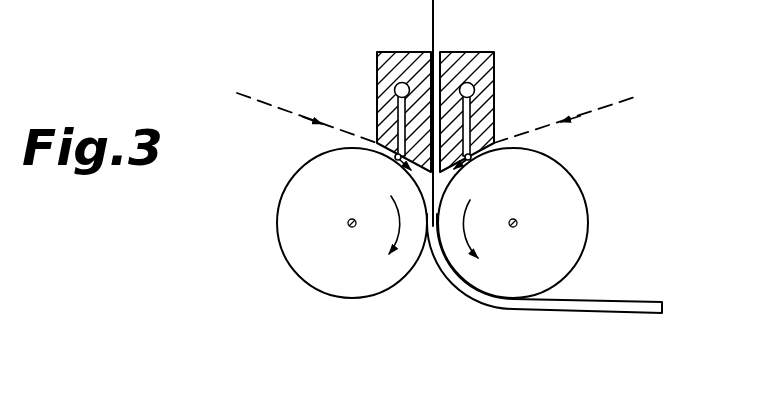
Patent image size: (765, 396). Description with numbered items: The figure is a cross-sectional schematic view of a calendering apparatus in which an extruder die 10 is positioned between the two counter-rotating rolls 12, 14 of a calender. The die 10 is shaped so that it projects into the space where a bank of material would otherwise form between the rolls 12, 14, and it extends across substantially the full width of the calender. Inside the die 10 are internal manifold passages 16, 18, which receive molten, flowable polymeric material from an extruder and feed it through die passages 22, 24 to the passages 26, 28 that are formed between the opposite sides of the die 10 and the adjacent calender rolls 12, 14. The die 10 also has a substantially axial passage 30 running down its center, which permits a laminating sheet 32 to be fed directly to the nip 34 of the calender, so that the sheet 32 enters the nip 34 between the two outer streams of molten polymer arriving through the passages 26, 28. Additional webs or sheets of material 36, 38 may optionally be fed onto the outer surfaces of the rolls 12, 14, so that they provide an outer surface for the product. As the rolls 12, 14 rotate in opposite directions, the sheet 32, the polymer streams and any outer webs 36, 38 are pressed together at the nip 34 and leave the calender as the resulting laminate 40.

The extruder die 10 is at (498, 97).
The calender roll 12 is at (302, 233).
The calender roll 14 is at (572, 240).
The internal manifold passage 16 is at (397, 87).
The internal manifold passage 18 is at (471, 88).
The die passage 22 is at (399, 105).
The die passage 24 is at (468, 122).
The passage 26 is at (396, 161).
The passage 28 is at (451, 170).
The axial passage 30 is at (434, 52).
The laminating sheet 32 is at (432, 14).
The nip 34 is at (430, 232).
The web or sheet of material 36 is at (285, 112).
The web or sheet of material 38 is at (611, 107).
The laminate 40 is at (639, 313).